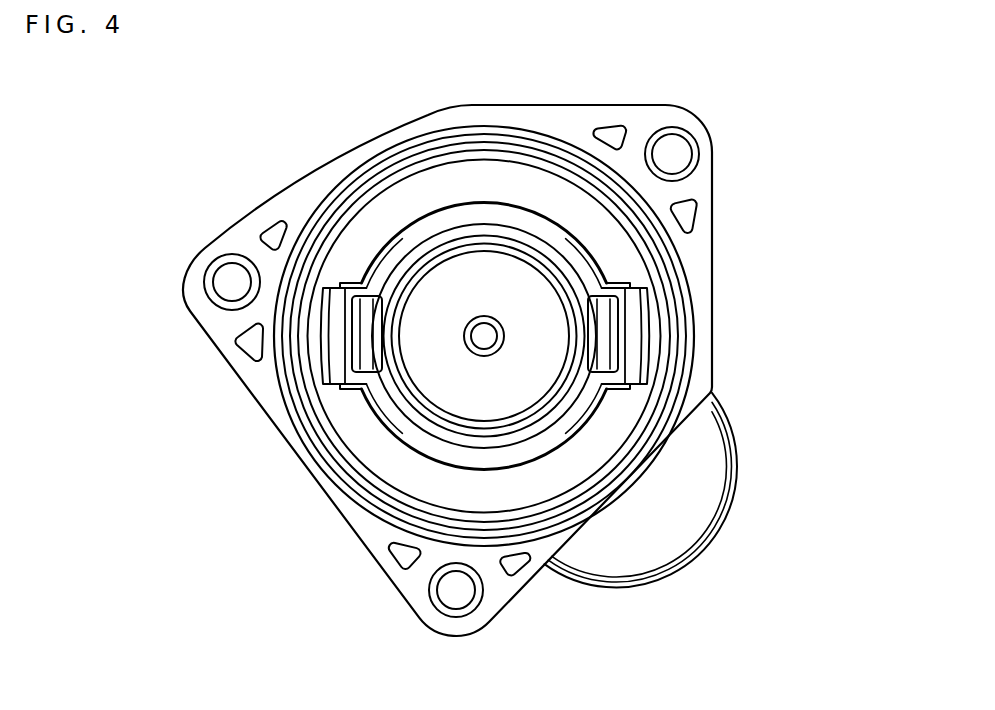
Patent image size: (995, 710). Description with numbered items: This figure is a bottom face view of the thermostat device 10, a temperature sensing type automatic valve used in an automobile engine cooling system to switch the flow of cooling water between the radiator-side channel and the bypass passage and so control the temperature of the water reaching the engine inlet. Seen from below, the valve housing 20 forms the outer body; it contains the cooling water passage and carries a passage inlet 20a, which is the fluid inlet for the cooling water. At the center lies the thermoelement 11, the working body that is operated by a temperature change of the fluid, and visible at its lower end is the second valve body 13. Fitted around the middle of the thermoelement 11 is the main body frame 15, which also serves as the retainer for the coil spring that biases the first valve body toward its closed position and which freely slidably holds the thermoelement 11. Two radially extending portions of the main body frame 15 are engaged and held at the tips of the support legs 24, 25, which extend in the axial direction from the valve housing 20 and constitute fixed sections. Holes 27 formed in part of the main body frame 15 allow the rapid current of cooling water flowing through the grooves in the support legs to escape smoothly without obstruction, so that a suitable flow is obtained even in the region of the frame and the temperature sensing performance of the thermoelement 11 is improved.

The thermostat device 10 is at (253, 176).
The thermoelement 11 is at (484, 338).
The second valve body 13 is at (513, 398).
The main body frame 15 is at (580, 397).
The valve housing 20 is at (702, 188).
The passage inlet 20a is at (738, 447).
The support leg 24 is at (328, 311).
The support leg 25 is at (650, 362).
The holes 27 is at (358, 334).